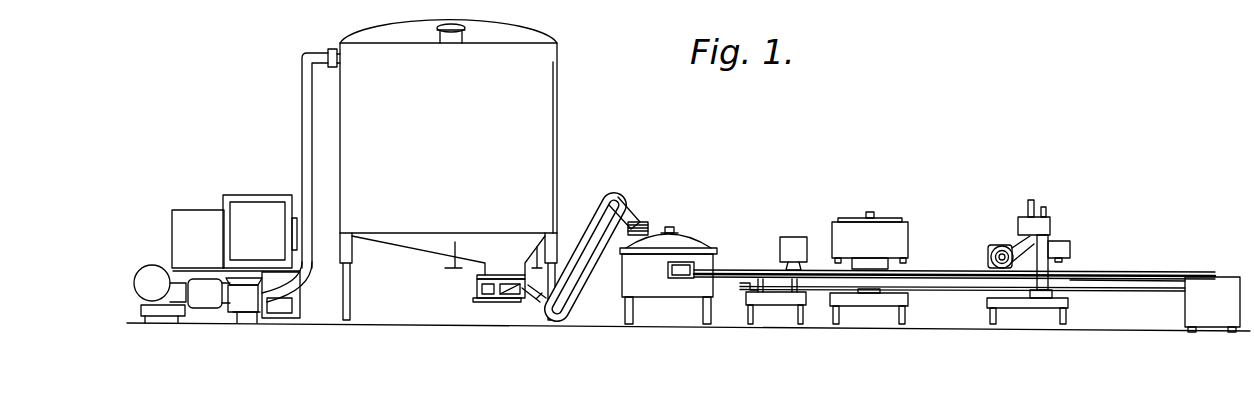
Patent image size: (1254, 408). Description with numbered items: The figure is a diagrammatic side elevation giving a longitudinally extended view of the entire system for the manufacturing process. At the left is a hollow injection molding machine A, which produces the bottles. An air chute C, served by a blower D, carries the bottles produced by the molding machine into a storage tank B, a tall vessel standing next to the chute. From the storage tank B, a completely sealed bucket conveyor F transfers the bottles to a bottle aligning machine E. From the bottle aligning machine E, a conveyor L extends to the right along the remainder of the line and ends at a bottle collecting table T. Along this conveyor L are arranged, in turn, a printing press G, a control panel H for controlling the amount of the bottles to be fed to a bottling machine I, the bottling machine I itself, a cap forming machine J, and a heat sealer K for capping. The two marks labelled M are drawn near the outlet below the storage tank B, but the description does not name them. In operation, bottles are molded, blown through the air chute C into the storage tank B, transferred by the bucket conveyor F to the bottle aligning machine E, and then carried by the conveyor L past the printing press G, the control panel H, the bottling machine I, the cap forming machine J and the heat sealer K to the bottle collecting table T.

The hollow injection molding machine A is at (241, 195).
The storage tank B is at (543, 70).
The air chute C is at (303, 82).
The blower D is at (150, 270).
The bottle aligning machine E is at (690, 248).
The completely sealed bucket conveyor F is at (618, 197).
The printing press G is at (772, 298).
The control panel H is at (788, 236).
The bottling machine I is at (890, 232).
The cap forming machine J is at (1052, 225).
The heat sealer K is at (1067, 246).
The conveyor L is at (1104, 277).
The level indicators M is at (493, 253).
The bottle collecting table T is at (1220, 300).